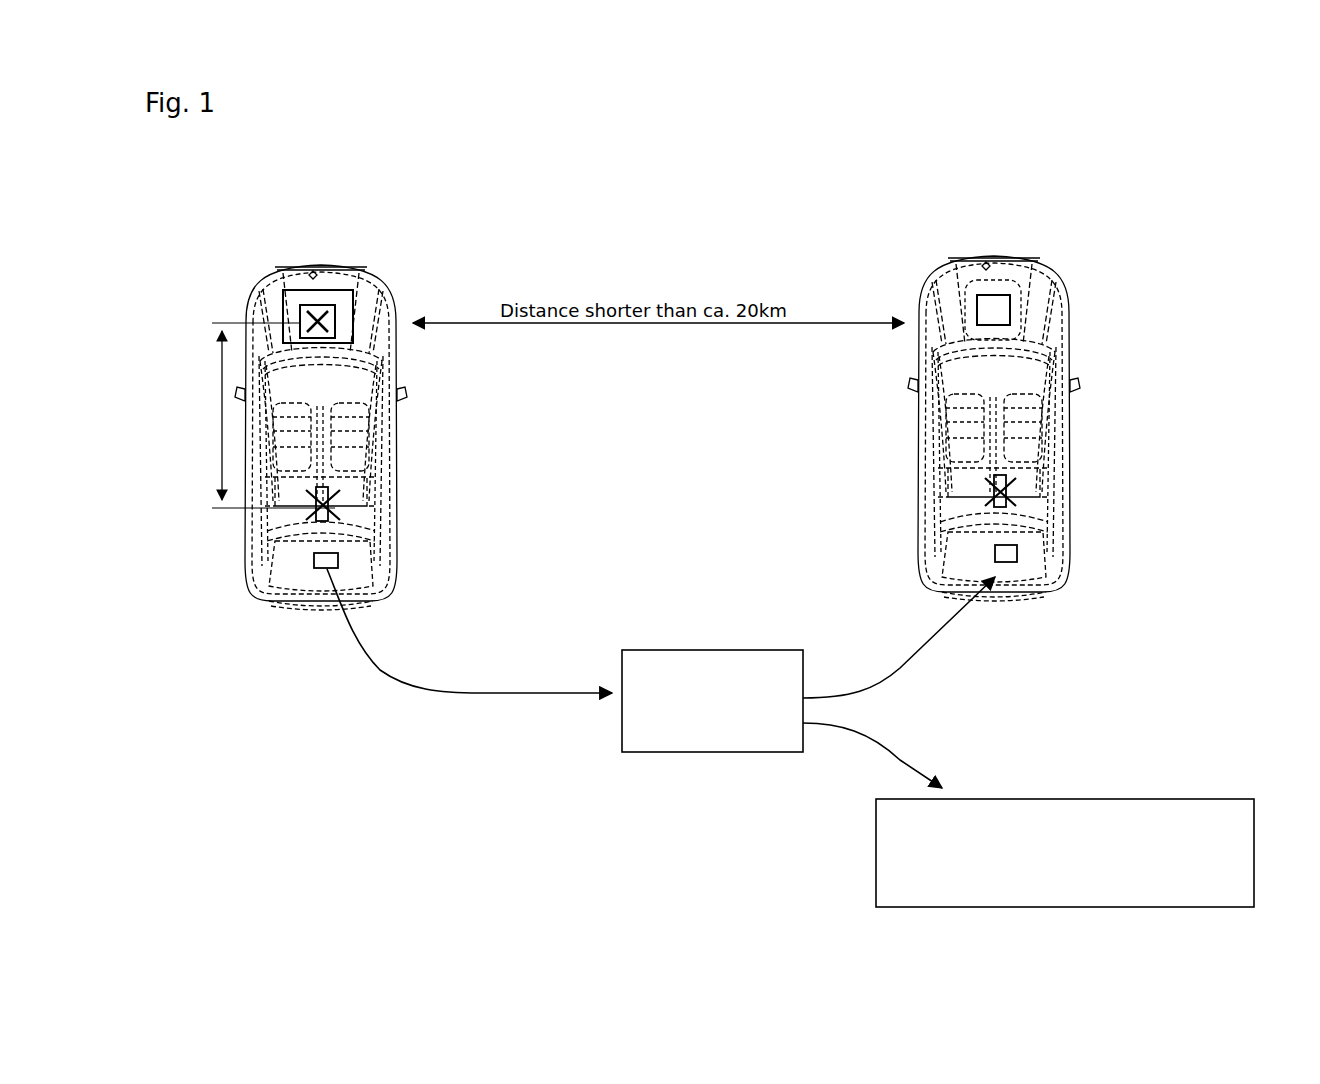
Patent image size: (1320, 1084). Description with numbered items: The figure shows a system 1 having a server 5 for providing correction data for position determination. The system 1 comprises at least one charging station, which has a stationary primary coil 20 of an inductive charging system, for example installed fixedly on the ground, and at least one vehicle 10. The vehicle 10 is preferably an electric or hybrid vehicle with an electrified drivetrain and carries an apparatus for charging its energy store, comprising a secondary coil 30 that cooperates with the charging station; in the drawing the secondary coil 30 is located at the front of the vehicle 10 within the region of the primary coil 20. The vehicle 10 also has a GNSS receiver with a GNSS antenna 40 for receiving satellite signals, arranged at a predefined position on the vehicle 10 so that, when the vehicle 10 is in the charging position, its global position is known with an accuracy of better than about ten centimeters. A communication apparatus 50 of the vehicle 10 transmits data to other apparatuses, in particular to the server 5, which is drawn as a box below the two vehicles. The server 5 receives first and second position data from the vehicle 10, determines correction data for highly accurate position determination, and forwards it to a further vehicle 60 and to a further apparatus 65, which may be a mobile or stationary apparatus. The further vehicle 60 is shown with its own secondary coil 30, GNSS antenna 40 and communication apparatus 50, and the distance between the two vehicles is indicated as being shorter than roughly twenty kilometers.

The system 1 is at (1118, 189).
The server 5 is at (718, 650).
The vehicle 10 is at (393, 435).
The primary coil 20 is at (352, 300).
The secondary coil 30 is at (300, 308).
The GNSS antenna 40 is at (320, 504).
The communication apparatus 50 is at (340, 560).
The further vehicle 60 is at (1068, 332).
The further apparatus 65 is at (1088, 800).